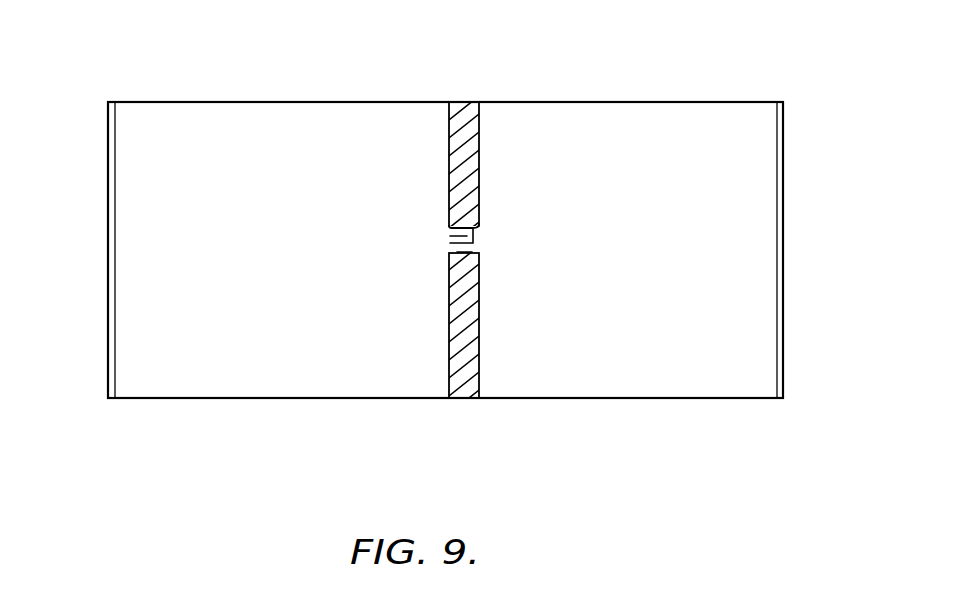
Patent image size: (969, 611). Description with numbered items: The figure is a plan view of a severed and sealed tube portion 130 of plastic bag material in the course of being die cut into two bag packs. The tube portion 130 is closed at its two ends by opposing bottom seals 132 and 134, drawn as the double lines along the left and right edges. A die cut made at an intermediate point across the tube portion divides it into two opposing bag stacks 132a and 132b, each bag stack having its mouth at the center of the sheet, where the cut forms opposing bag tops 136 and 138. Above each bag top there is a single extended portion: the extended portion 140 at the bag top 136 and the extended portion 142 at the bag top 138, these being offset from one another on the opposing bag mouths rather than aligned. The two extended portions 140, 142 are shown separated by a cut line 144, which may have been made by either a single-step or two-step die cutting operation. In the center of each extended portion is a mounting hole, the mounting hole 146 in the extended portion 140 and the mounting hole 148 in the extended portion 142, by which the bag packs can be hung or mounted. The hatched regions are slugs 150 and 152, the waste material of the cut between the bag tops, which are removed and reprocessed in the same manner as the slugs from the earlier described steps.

The severed and sealed tube portion 130 is at (158, 96).
The bottom seal 132 is at (108, 204).
The bag stack 132a is at (276, 278).
The bag stack 132b is at (668, 278).
The bottom seal 134 is at (780, 160).
The bag top 136 is at (447, 160).
The bag top 138 is at (485, 165).
The single off-set extended portion 140 is at (456, 210).
The single off-set extended portion 142 is at (465, 262).
The tab 144 is at (478, 229).
The mounting hole 146 is at (452, 237).
The mounting hole 148 is at (477, 245).
The slug 150 is at (466, 124).
The slug 152 is at (462, 398).